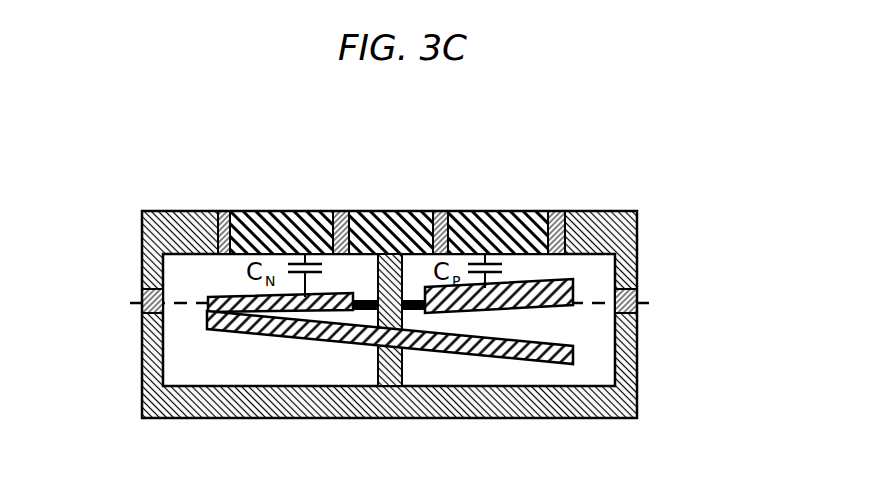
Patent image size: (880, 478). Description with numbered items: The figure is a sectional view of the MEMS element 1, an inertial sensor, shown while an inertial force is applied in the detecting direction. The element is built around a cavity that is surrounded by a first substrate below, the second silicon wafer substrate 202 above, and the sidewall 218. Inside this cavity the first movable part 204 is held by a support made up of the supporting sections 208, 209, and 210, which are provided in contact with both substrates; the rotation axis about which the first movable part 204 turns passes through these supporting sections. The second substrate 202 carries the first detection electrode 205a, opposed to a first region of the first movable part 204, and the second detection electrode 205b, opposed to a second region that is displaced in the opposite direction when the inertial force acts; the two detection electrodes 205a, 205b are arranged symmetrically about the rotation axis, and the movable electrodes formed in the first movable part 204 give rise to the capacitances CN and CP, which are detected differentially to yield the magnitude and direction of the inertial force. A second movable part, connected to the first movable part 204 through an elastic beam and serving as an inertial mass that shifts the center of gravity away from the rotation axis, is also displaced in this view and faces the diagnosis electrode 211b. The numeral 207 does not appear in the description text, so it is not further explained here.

The MEMS element 1 is at (149, 175).
The second silicon wafer substrate 202 is at (623, 235).
The first movable part 204 is at (550, 236).
The first detection electrode 205a is at (277, 224).
The second detection electrode 205b is at (500, 230).
The center fixed electrode 207 is at (388, 228).
The supporting section 208 is at (403, 360).
The supporting section 209 is at (352, 331).
The supporting section 210 is at (310, 335).
The diagnosis electrode 211b is at (573, 346).
The sidewall 218 is at (130, 267).